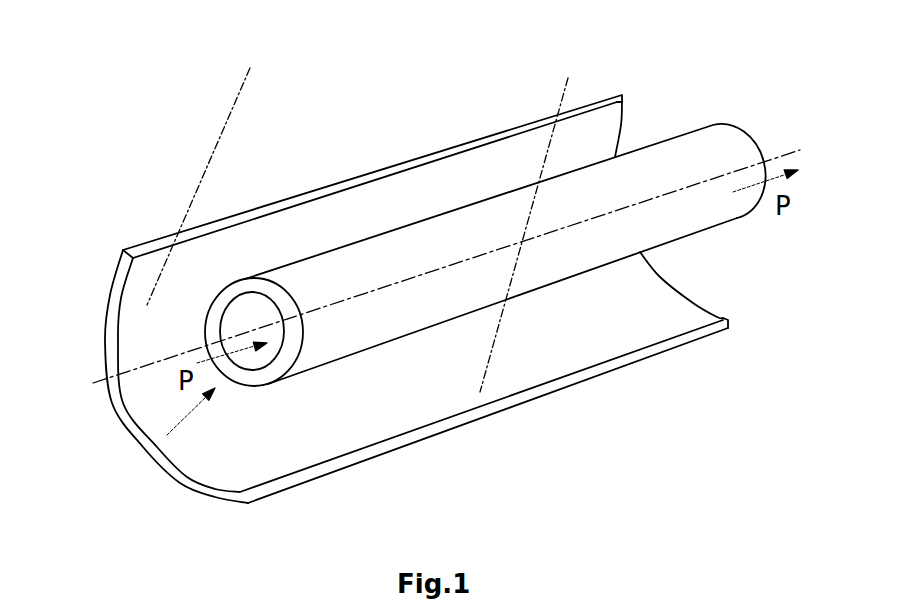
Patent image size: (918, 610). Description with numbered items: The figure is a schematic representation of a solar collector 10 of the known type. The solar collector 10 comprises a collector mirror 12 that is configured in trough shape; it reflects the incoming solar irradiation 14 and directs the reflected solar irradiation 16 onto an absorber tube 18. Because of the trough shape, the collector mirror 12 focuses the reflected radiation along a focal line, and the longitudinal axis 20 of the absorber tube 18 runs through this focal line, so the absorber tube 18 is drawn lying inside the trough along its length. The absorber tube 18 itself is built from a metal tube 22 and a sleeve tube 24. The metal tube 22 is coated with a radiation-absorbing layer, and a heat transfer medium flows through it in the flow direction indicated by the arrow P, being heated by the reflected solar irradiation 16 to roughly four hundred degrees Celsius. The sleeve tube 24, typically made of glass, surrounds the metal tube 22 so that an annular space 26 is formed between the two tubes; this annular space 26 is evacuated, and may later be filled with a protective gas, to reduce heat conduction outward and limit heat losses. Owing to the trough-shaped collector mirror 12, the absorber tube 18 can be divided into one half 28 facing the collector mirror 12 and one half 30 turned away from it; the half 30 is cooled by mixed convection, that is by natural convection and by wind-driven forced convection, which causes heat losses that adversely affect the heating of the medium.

The solar collector 10 is at (160, 113).
The collector mirror 12 is at (190, 480).
The solar irradiation 14 is at (220, 142).
The reflected solar irradiation 16 is at (190, 307).
The absorber tube 18 is at (700, 110).
The longitudinal axis 20 is at (108, 385).
The metal tube 22 is at (238, 388).
The sleeve tube 24 is at (248, 277).
The annular space 26 is at (272, 381).
The half facing collector mirror 28 is at (147, 460).
The half turned away from collector mirror 30 is at (316, 278).